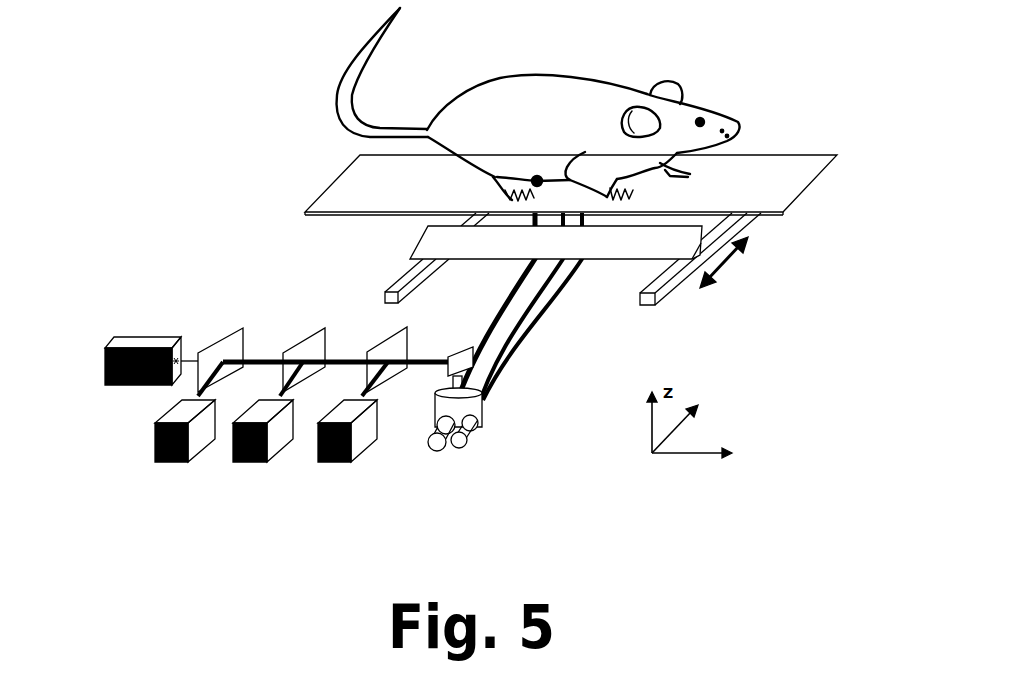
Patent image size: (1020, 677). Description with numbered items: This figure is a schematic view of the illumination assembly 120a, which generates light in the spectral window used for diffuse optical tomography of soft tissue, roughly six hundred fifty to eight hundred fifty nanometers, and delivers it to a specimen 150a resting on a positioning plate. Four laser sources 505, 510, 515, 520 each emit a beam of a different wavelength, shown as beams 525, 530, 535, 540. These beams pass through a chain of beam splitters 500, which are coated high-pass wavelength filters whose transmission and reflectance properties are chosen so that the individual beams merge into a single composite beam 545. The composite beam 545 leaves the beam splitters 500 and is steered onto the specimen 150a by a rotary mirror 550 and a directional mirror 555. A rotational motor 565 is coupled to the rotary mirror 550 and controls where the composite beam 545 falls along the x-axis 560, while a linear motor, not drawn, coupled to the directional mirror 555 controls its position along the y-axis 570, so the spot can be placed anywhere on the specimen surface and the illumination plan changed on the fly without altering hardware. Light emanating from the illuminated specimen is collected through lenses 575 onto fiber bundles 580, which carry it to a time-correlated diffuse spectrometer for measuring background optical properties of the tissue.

The illumination assembly 120a is at (236, 158).
The specimen 150a is at (547, 72).
The beam splitters 500 is at (260, 392).
The laser source 505 is at (105, 362).
The laser source 510 is at (180, 462).
The laser source 515 is at (248, 462).
The laser source 520 is at (330, 462).
The beam 525 is at (200, 345).
The beam 530 is at (213, 388).
The beam 535 is at (290, 392).
The beam 540 is at (378, 398).
The composite beam 545 is at (405, 372).
The rotary mirror 550 is at (462, 353).
The directional mirror 555 is at (641, 261).
The x-axis 560 is at (712, 464).
The rotational motor 565 is at (433, 410).
The y-axis 570 is at (690, 418).
The lenses 575 is at (462, 452).
The fiber bundles 580 is at (480, 432).